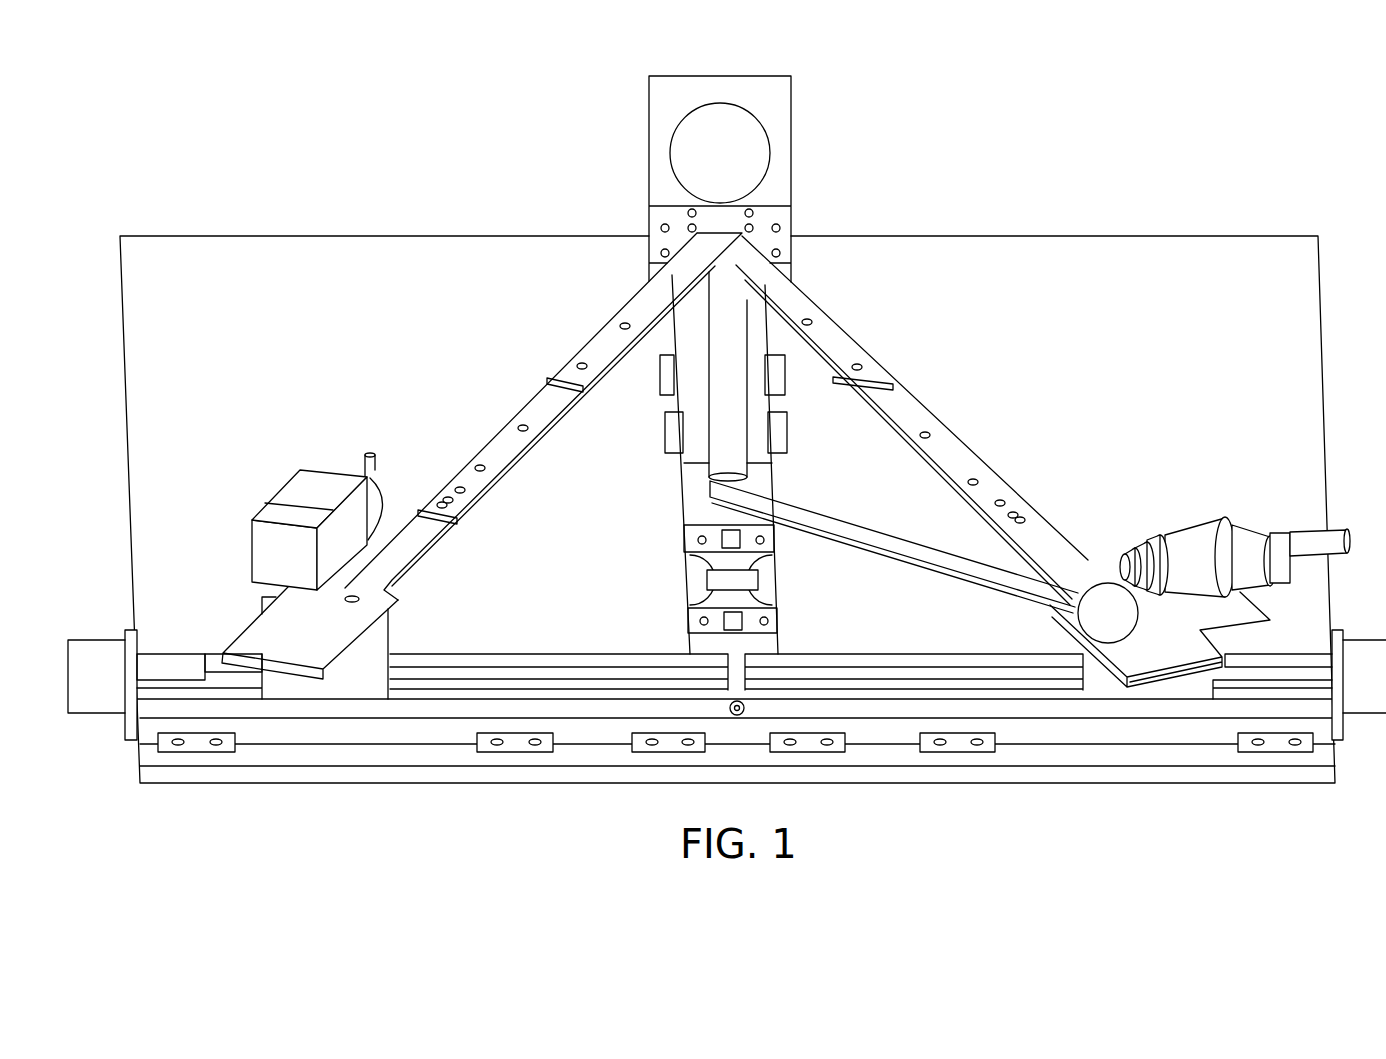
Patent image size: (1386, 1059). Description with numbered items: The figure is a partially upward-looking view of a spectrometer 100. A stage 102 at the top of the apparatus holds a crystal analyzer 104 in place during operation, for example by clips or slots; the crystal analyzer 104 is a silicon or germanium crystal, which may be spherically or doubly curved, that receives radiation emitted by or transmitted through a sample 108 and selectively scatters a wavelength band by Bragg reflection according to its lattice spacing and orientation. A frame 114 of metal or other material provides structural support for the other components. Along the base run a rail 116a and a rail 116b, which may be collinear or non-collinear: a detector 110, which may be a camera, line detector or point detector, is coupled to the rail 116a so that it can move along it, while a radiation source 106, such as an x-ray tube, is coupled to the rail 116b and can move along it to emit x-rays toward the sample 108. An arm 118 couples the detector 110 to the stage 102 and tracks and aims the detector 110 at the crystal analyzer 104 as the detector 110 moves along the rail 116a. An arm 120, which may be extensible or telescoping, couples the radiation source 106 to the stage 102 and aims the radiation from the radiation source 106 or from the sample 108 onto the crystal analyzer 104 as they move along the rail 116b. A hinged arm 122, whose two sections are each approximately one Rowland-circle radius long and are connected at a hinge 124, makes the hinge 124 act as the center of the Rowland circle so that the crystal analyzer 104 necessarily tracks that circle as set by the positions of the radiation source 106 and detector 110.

The spectrometer 100 is at (1012, 140).
The stage 102 is at (780, 113).
The crystal analyzer 104 is at (700, 150).
The radiation source 106 is at (1280, 540).
The sample 108 is at (1098, 618).
The detector 110 is at (272, 537).
The frame 114 is at (695, 532).
The rail 116a is at (571, 673).
The rail 116b is at (810, 670).
The arm 118 is at (418, 533).
The arm 120 is at (900, 412).
The hinged arm 122 is at (722, 360).
The hinge 124 is at (732, 473).